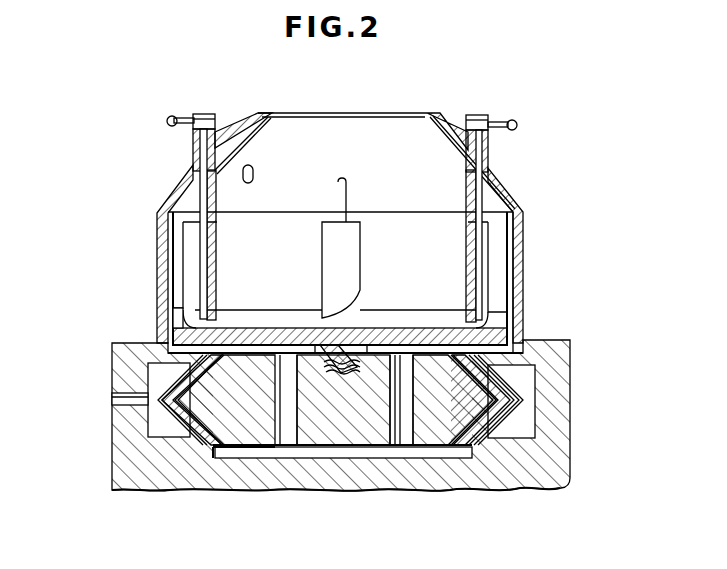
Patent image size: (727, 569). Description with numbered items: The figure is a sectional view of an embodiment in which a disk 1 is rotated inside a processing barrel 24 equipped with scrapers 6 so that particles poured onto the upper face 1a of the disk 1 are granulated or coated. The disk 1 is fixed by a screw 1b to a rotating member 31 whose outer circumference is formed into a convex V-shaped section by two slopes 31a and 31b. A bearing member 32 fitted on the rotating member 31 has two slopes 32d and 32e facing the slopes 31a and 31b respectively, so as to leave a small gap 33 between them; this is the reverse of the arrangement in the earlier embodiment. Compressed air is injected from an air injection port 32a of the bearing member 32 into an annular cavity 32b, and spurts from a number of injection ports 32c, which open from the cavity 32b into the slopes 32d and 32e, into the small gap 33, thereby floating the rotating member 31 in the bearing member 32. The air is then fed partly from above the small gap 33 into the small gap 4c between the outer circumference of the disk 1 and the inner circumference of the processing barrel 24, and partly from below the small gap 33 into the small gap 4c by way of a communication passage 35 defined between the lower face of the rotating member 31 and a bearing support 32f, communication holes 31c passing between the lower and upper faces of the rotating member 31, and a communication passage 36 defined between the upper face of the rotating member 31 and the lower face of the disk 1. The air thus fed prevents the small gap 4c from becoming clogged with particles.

The disk 1 is at (502, 330).
The upper face of the disk 1a is at (493, 315).
The screw 1b is at (313, 375).
The small gap 4c is at (513, 328).
The scraper 6 is at (487, 158).
The processing barrel 24 is at (524, 225).
The rotating member 31 is at (331, 440).
The slope 31a is at (507, 380).
The slope 31b is at (465, 432).
The communication hole 31c is at (402, 450).
The bearing member 32 is at (560, 412).
The air injection port 32a is at (113, 399).
The annular cavity 32b is at (158, 422).
The injection port 32c is at (500, 447).
The slope 32d is at (165, 422).
The slope 32e is at (213, 437).
The bearing support 32f is at (560, 472).
The small gap 33 is at (233, 460).
The communication passage 35 is at (445, 458).
The communication passage 36 is at (183, 332).